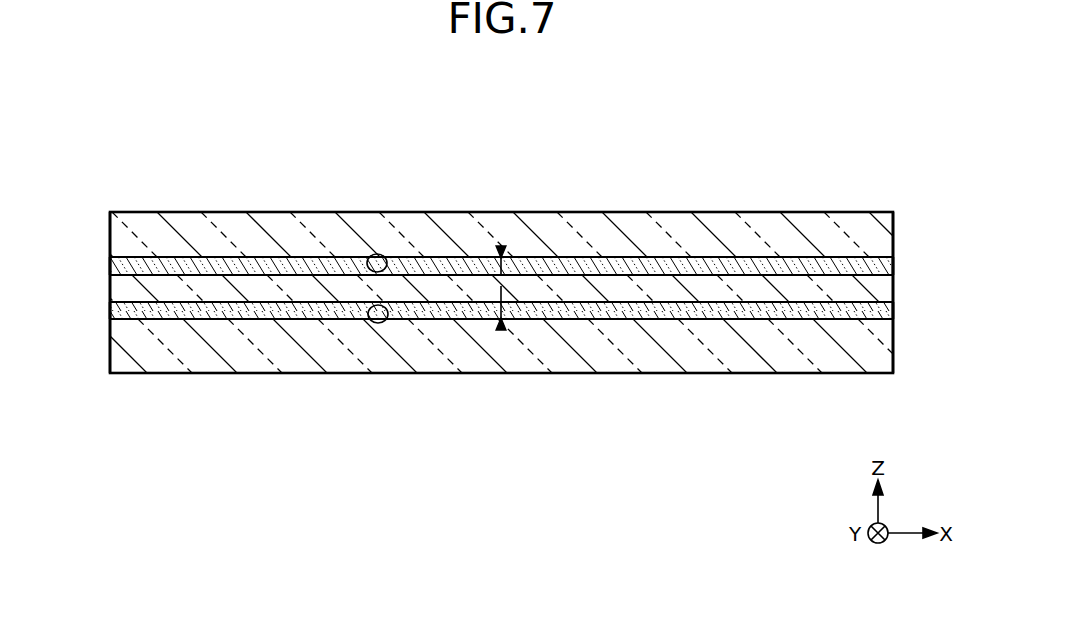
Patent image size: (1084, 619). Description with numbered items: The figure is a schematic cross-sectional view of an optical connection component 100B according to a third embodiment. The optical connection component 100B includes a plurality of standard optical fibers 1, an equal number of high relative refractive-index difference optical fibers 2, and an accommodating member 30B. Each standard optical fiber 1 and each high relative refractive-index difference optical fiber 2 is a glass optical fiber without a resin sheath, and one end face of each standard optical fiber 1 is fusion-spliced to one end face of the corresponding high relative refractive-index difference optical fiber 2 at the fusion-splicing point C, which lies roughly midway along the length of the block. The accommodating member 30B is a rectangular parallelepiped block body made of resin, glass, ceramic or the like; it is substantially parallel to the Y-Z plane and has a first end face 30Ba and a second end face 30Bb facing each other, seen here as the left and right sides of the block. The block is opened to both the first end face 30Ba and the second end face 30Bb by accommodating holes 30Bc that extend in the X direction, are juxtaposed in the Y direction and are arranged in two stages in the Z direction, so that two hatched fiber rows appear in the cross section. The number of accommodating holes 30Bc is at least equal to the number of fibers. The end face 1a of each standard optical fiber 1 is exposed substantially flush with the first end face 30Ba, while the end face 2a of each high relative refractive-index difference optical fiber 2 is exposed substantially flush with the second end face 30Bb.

The optical connection component 100B is at (816, 135).
The accommodating member 30B is at (446, 207).
The first end face 30Ba is at (110, 335).
The second end face 30Bb is at (894, 343).
The accommodating holes 30Bc is at (386, 256).
The standard optical fiber 1 is at (303, 257).
The end face of standard optical fiber 1a is at (110, 259).
The high relative refractive-index difference optical fiber 2 is at (693, 257).
The end face of high relative refractive-index difference optical fiber 2a is at (893, 263).
The fusion-splicing point C is at (501, 248).